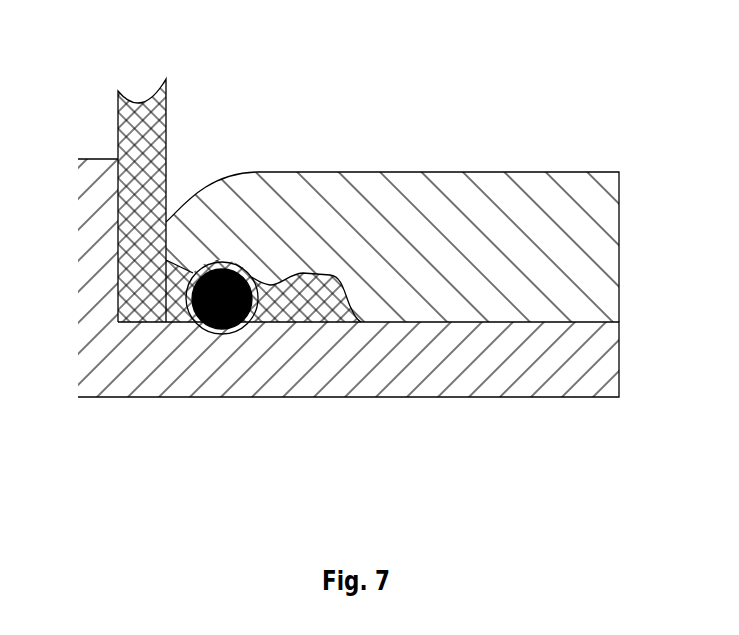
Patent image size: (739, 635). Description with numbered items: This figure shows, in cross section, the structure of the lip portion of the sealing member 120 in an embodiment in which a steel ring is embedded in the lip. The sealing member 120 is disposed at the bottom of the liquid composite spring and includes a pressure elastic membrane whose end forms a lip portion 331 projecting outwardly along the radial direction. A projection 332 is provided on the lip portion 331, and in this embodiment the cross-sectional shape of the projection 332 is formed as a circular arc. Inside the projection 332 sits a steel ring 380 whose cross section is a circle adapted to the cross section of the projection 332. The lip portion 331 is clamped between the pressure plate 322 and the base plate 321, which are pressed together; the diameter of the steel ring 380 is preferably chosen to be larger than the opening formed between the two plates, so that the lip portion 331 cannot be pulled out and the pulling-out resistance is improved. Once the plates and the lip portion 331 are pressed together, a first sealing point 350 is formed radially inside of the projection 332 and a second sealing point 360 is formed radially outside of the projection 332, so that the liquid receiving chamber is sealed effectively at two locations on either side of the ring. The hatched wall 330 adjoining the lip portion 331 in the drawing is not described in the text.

The sealing member 120 is at (57, 40).
The base plate 321 is at (385, 345).
The pressure plate 322 is at (478, 232).
The rib 330 is at (138, 258).
The lip portion 331 is at (175, 302).
The projection 332 is at (222, 268).
The first sealing point 350 is at (182, 268).
The second sealing point 360 is at (268, 280).
The steel ring 380 is at (227, 295).